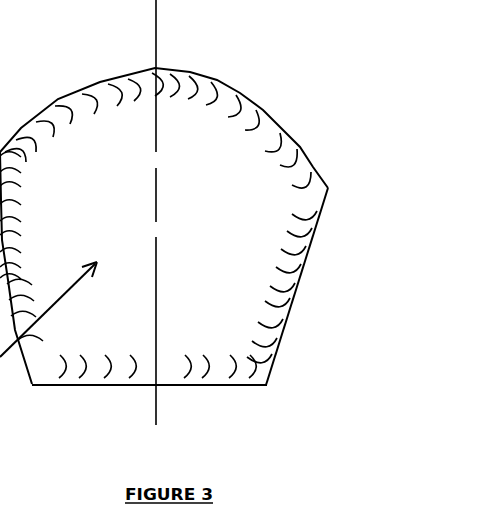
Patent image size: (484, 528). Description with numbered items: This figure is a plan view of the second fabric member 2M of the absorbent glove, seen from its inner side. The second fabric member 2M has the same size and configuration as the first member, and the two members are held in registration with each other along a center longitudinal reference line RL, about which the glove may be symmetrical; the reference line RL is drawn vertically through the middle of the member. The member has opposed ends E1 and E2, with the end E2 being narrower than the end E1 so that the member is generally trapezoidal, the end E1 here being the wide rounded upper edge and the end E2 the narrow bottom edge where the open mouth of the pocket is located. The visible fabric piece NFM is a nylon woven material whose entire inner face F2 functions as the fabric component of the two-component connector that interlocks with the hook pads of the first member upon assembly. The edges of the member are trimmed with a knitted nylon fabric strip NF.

The end E1 is at (97, 140).
The inner face F2 is at (265, 188).
The second fabric member 2M is at (228, 308).
The fabric piece NFM is at (240, 260).
The knitted nylon fabric strip NF is at (265, 350).
The end E2 is at (73, 385).
The center longitudinal reference line RL is at (158, 402).